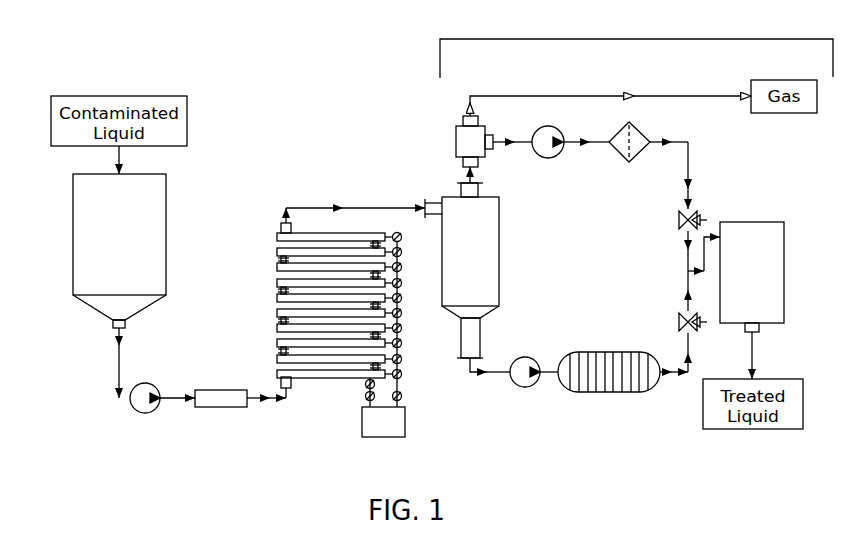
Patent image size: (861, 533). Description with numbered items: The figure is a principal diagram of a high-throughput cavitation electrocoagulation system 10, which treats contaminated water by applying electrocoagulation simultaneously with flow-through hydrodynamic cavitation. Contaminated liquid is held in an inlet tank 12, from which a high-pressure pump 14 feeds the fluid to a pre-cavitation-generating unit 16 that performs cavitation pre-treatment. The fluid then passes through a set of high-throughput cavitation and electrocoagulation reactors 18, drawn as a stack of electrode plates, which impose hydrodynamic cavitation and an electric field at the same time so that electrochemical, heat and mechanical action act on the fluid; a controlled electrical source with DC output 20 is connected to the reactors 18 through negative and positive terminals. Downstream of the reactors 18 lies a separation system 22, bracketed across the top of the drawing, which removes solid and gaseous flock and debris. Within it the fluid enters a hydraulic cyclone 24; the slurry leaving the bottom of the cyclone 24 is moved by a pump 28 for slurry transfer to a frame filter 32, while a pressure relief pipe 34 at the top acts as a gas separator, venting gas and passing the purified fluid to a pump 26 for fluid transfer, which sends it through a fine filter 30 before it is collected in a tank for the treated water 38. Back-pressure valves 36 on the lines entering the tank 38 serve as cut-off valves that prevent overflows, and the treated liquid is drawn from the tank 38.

The high-throughput cavitation electrocoagulation system 10 is at (283, 67).
The inlet tank 12 is at (98, 251).
The high-pressure pump 14 is at (130, 408).
The pre-cavitation-generating unit 16 is at (216, 416).
The high-throughput cavitation and electrocoagulation reactors 18 is at (258, 302).
The controlled electrical source with DC output 20 is at (404, 433).
The separation system 22 is at (636, 46).
The hydraulic cyclone 24 is at (486, 270).
The pump for fluid transfer 26 is at (561, 158).
The pump for slurry transfer 28 is at (539, 357).
The fine filter 30 is at (646, 136).
The frame filter 32 is at (609, 388).
The pressure relief pipe 34 is at (451, 141).
The back-pressure valves 36 is at (671, 266).
The tank for the treated water 38 is at (772, 277).